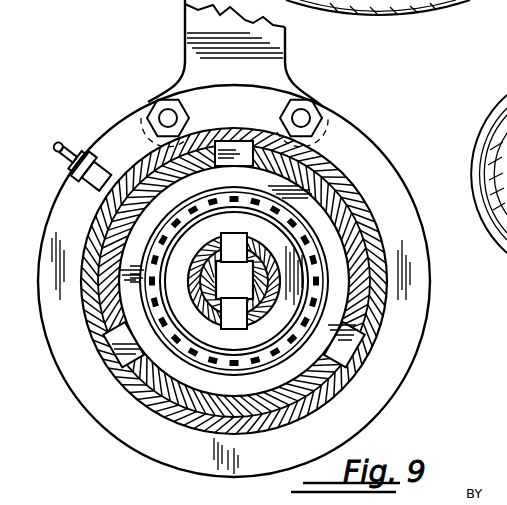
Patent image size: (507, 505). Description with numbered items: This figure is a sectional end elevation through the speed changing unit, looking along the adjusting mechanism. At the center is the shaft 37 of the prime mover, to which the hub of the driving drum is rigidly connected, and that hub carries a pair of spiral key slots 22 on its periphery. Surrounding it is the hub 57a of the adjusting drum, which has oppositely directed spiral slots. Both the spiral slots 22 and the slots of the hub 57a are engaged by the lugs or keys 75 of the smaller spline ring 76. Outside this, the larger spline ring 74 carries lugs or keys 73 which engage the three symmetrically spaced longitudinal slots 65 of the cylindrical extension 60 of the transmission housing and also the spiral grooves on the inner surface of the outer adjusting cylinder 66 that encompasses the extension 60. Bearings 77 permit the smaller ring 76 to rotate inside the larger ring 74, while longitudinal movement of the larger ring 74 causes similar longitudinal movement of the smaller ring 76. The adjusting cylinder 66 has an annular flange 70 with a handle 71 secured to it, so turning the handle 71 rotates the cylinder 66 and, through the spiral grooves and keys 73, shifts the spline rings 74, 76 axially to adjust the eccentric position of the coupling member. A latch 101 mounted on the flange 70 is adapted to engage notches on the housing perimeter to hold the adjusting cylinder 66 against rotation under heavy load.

The spiral key slots 22 is at (251, 243).
The shaft 37 is at (216, 286).
The hub 57a is at (277, 265).
The cylindrical extension 60 is at (356, 188).
The longitudinal slots 65 is at (213, 140).
The outer adjusting cylinder 66 is at (335, 168).
The annular flange 70 is at (348, 127).
The handle 71 is at (285, 44).
The lugs or keys 73 is at (245, 138).
The spline ring 74 is at (138, 176).
The lugs or keys 75 is at (235, 243).
The smaller spline ring 76 is at (196, 216).
The bearings 77 is at (231, 160).
The latch 101 is at (60, 146).